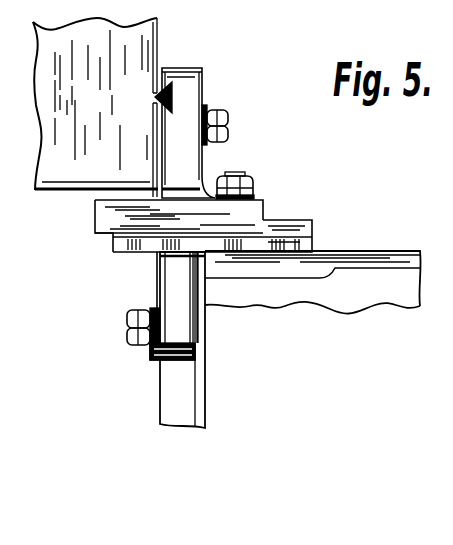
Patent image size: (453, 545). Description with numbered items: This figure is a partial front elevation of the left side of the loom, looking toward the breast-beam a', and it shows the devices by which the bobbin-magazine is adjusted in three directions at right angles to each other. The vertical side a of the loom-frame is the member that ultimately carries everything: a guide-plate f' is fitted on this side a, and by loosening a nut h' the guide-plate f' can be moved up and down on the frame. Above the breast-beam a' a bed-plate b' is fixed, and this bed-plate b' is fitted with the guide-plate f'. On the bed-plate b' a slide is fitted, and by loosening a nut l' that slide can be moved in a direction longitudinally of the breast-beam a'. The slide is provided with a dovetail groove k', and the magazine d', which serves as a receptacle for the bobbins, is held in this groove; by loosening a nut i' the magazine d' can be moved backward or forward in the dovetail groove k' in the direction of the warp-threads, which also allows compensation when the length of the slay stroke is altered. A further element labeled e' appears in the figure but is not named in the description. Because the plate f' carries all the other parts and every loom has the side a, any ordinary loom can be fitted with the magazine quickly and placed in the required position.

The magazine d' is at (119, 102).
The dovetail groove k' is at (203, 87).
The nut i' is at (233, 121).
The nut l' is at (244, 170).
The plate e' is at (161, 226).
The bed-plate b' is at (226, 225).
The breast-beam a' is at (314, 268).
The side of the loom-frame a is at (199, 340).
The guide-plate f' is at (156, 325).
The nut h' is at (122, 331).